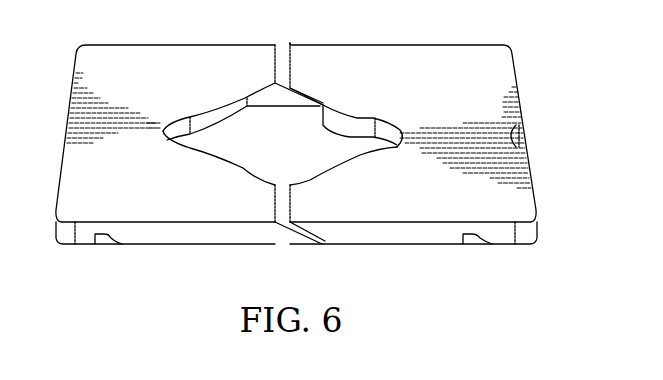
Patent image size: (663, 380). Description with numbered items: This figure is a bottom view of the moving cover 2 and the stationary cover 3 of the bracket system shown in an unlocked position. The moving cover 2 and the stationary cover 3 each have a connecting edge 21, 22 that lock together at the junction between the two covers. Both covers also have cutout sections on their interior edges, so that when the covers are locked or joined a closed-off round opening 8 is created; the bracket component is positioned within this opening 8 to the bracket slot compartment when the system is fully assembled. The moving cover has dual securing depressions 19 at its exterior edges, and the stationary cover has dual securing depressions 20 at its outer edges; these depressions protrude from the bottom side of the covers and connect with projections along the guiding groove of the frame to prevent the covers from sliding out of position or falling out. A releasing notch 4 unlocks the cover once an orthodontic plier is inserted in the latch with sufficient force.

The moving cover 2 is at (418, 88).
The stationary cover 3 is at (144, 191).
The releasing notch 4 is at (520, 137).
The opening for the bracket slot compartment 8 is at (220, 120).
The securing depression on the moving cover 19 is at (480, 240).
The securing depression on the stationary cover 20 is at (110, 240).
The connecting edge of the moving cover 21 is at (275, 198).
The connecting edge of the stationary cover 22 is at (323, 241).